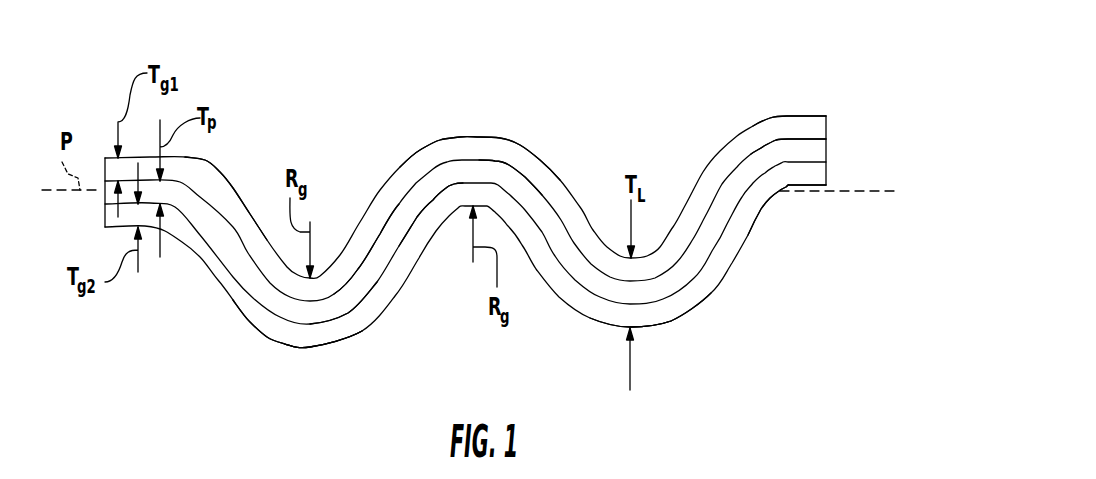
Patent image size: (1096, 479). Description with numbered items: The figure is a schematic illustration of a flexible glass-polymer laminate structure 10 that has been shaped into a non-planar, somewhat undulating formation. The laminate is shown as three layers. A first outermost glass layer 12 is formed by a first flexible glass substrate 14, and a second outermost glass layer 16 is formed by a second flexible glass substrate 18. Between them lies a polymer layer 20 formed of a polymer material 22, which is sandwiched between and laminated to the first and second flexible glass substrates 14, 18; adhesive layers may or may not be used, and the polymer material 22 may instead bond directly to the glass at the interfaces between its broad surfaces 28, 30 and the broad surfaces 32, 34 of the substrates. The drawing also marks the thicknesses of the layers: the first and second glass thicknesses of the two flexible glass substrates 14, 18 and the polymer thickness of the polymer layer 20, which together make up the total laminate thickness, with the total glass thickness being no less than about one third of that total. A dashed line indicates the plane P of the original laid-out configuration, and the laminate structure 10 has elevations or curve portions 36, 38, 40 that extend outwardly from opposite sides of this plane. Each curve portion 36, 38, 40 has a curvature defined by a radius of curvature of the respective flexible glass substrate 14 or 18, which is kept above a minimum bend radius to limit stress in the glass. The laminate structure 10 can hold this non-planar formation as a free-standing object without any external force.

The flexible glass-polymer laminate structure 10 is at (844, 72).
The first outermost glass layer 12 is at (835, 121).
The first flexible glass substrate 14 is at (232, 186).
The second outermost glass layer 16 is at (835, 175).
The second flexible glass substrate 18 is at (685, 297).
The polymer layer 20 is at (832, 150).
The polymer material 22 is at (505, 175).
The broad surface 28 is at (377, 244).
The broad surface 30 is at (418, 189).
The broad surface 32 is at (367, 302).
The broad surface 34 is at (328, 323).
The curve portion 36 is at (232, 359).
The curve portion 38 is at (514, 108).
The curve portion 40 is at (661, 368).